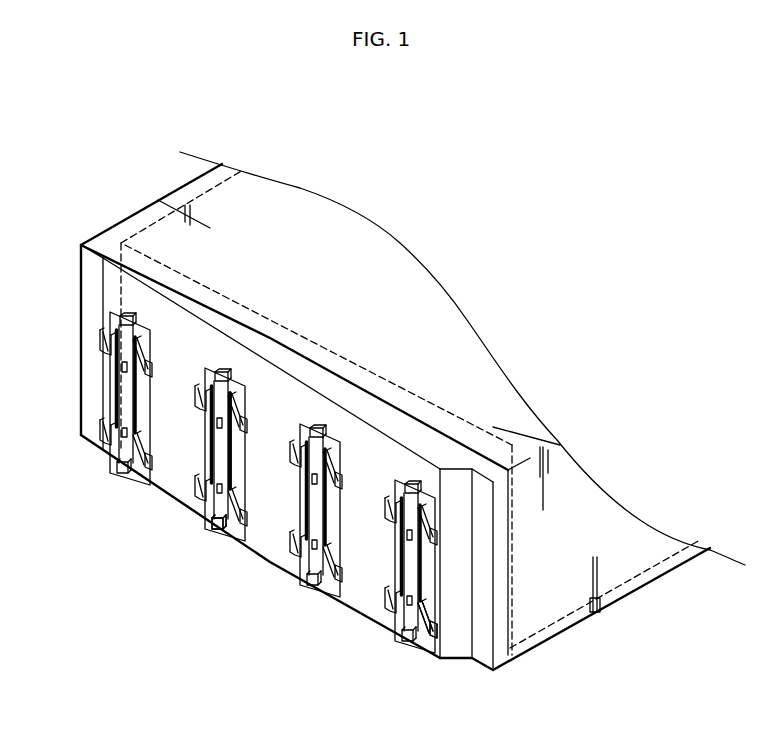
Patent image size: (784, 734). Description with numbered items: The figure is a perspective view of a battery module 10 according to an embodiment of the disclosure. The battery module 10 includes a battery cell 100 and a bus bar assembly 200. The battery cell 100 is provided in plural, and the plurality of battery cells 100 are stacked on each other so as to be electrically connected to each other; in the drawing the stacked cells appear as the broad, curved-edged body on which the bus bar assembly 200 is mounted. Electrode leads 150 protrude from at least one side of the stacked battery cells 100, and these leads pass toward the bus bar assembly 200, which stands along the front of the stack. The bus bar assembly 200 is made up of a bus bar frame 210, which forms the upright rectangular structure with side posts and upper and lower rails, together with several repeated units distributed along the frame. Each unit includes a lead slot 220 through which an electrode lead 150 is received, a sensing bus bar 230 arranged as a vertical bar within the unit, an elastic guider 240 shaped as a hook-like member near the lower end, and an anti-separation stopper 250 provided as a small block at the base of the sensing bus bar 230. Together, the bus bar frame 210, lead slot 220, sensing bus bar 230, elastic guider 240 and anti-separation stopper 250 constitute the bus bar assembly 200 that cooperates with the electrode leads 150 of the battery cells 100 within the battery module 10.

The battery module 10 is at (103, 154).
The battery cell 100 is at (553, 621).
The electrode lead 150 is at (237, 460).
The bus bar assembly 200 is at (266, 411).
The bus bar frame 210 is at (86, 238).
The lead slot 220 is at (336, 526).
The sensing bus bar 230 is at (220, 448).
The elastic guider 240 is at (443, 634).
The anti-separation stopper 250 is at (215, 531).